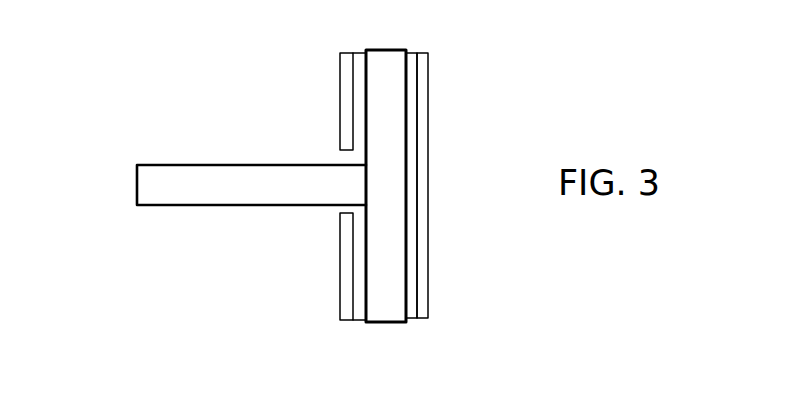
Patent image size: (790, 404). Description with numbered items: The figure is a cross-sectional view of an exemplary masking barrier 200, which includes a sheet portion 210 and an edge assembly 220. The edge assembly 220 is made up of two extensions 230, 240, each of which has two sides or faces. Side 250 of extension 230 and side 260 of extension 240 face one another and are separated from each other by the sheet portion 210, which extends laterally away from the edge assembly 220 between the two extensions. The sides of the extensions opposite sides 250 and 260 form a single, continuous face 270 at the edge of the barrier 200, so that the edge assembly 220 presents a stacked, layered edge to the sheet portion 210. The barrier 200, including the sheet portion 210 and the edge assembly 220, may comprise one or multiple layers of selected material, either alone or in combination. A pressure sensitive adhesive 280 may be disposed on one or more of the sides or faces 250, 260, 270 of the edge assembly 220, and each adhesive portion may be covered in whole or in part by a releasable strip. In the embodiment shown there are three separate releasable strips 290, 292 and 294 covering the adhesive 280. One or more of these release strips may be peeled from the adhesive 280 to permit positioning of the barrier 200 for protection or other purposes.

The barrier 200 is at (251, 106).
The sheet portion 210 is at (160, 192).
The edge assembly 220 is at (335, 42).
The extension 230 is at (389, 83).
The extension 240 is at (390, 278).
The side of extension 230 250 is at (368, 112).
The side of extension 240 260 is at (383, 247).
The continuous face 270 is at (394, 212).
The pressure sensitive adhesive 280 is at (354, 142).
The releasable strip 290 is at (432, 175).
The releasable strip 292 is at (345, 108).
The releasable strip 294 is at (345, 293).